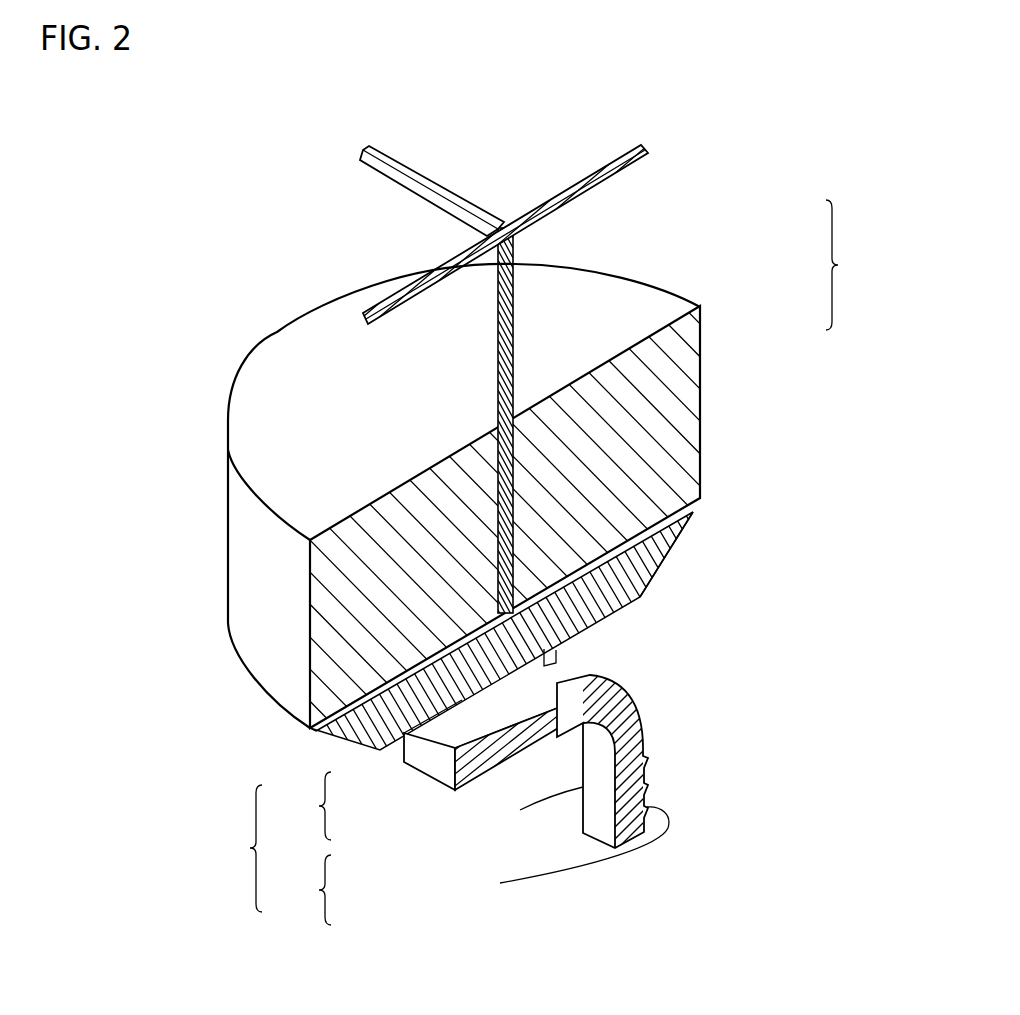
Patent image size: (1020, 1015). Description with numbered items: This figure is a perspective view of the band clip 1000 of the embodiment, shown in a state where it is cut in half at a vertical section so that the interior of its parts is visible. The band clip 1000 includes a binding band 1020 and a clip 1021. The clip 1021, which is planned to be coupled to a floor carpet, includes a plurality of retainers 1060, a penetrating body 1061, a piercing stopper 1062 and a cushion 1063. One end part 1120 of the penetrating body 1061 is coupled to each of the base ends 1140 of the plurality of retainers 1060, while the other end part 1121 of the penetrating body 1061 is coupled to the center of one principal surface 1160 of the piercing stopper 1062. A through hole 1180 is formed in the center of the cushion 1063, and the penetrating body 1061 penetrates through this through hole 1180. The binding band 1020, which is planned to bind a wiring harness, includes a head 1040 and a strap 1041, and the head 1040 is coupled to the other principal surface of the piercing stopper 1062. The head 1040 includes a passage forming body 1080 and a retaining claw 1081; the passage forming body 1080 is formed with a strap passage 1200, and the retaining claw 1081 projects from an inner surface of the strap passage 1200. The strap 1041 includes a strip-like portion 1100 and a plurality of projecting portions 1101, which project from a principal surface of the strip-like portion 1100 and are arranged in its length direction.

The band clip 1000 is at (734, 118).
The binding band 1020 is at (227, 848).
The clip 1021 is at (559, 370).
The head 1040 is at (295, 806).
The strap 1041 is at (297, 890).
The retainers 1060 is at (407, 168).
The penetrating body 1061 is at (600, 295).
The piercing stopper 1062 is at (688, 528).
The cushion 1063 is at (703, 348).
The passage forming body 1080 is at (433, 783).
The retaining claw 1081 is at (404, 765).
The strip-like portion 1100 is at (520, 810).
The projecting portions 1101 is at (500, 883).
The one end part 1120 is at (507, 233).
The other end part 1121 is at (528, 636).
The base ends 1140 is at (487, 234).
The one principal surface 1160 is at (310, 728).
The through hole 1180 is at (513, 458).
The strap passage 1200 is at (592, 683).